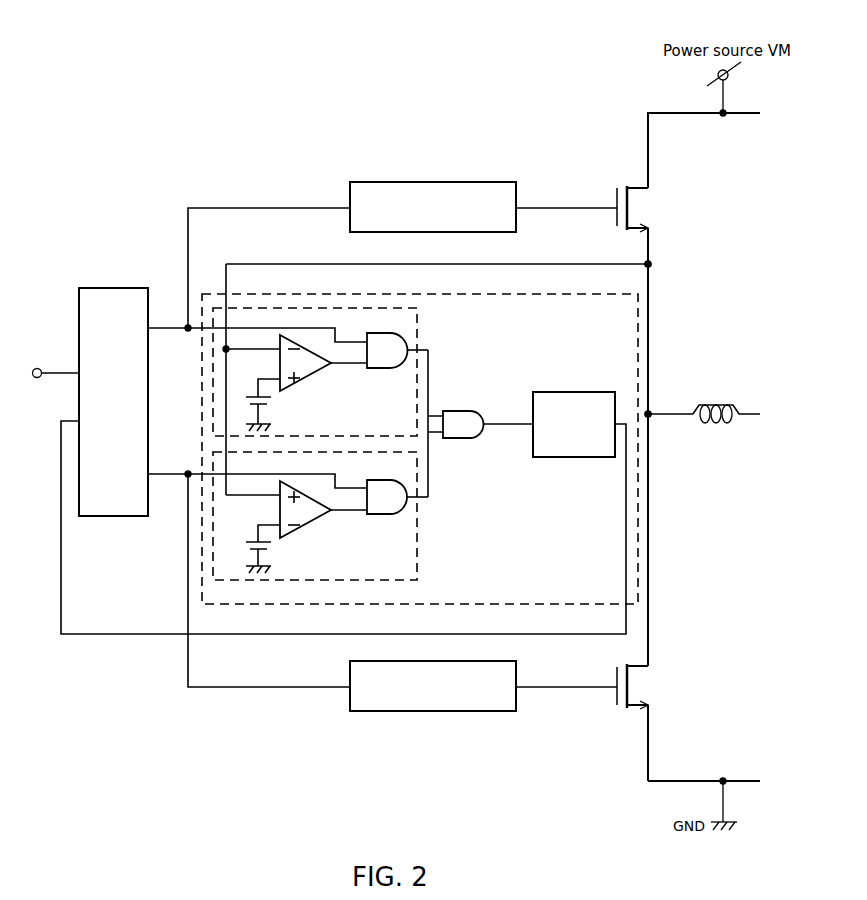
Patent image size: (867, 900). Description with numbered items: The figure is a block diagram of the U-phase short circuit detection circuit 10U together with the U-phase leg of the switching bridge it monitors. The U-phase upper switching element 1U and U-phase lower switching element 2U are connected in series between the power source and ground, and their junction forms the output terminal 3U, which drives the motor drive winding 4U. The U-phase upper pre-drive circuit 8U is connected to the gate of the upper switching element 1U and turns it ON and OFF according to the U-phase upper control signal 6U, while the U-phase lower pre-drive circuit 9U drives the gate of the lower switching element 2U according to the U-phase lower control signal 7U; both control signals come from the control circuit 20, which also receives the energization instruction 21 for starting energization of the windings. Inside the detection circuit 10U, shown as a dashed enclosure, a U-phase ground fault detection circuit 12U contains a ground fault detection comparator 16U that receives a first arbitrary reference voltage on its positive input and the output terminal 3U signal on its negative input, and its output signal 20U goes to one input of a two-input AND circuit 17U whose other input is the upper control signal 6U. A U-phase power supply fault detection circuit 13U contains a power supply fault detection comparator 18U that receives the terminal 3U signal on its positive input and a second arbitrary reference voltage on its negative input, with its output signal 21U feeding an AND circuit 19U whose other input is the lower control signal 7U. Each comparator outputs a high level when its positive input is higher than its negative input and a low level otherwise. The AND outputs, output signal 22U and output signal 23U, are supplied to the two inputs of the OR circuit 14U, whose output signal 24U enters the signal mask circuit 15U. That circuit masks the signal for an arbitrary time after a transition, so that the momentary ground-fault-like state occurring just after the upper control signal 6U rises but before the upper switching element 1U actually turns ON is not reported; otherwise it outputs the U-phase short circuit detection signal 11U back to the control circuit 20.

The U-phase upper switching element 1U is at (634, 186).
The U-phase lower switching element 2U is at (630, 710).
The output terminal 3U is at (452, 375).
The motor drive winding 4U is at (694, 406).
The U-phase upper control signal 6U is at (185, 338).
The U-phase lower control signal 7U is at (185, 468).
The U-phase upper pre-drive circuit 8U is at (458, 182).
The U-phase lower pre-drive circuit 9U is at (458, 711).
The U-phase short circuit detection circuit 10U is at (545, 294).
The U-phase short circuit detection signal 11U is at (150, 625).
The U-phase ground fault detection circuit 12U is at (417, 312).
The U-phase power supply fault detection circuit 13U is at (417, 530).
The two-input OR circuit 14U is at (452, 410).
The signal mask circuit 15U is at (575, 392).
The ground fault detection comparator 16U is at (300, 389).
The two-input AND circuit 17U is at (386, 368).
The power supply fault detection comparator 18U is at (300, 536).
The two-input AND circuit 19U is at (386, 514).
The control circuit 20 is at (135, 288).
The output signal 20U is at (363, 379).
The energization instruction 21 is at (72, 358).
The output signal 21U is at (363, 525).
The output signal 22U is at (435, 350).
The output signal 23U is at (435, 458).
The output signal 24U is at (525, 413).